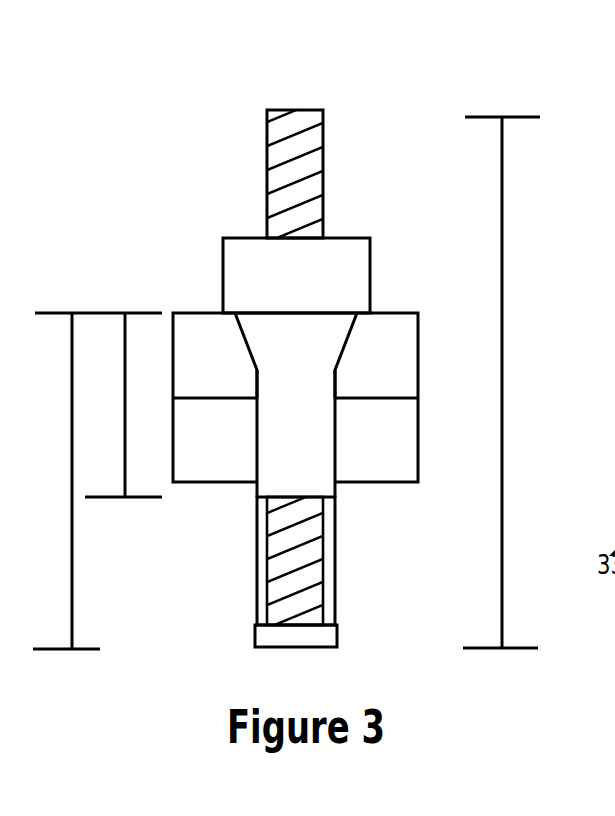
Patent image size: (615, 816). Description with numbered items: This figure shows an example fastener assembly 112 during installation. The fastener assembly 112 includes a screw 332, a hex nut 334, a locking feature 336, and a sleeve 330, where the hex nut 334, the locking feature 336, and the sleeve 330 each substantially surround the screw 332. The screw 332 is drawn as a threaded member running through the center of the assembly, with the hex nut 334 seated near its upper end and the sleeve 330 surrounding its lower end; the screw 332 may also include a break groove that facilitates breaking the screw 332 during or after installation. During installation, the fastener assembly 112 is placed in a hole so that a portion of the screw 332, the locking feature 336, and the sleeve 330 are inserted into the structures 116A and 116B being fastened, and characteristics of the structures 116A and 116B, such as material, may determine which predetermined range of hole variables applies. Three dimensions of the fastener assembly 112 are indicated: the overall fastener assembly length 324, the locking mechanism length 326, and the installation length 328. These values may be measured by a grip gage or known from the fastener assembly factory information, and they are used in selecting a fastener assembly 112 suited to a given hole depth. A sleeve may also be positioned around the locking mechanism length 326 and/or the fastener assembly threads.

The fastener assembly 112 is at (347, 118).
The screw 332 is at (270, 162).
The hex nut 334 is at (203, 253).
The structure 116A is at (418, 310).
The structure 116B is at (419, 486).
The locking feature 336 is at (338, 443).
The sleeve 330 is at (258, 586).
The locking mechanism length 326 is at (98, 405).
The installation length 328 is at (66, 481).
The fastener assembly length 324 is at (502, 382).